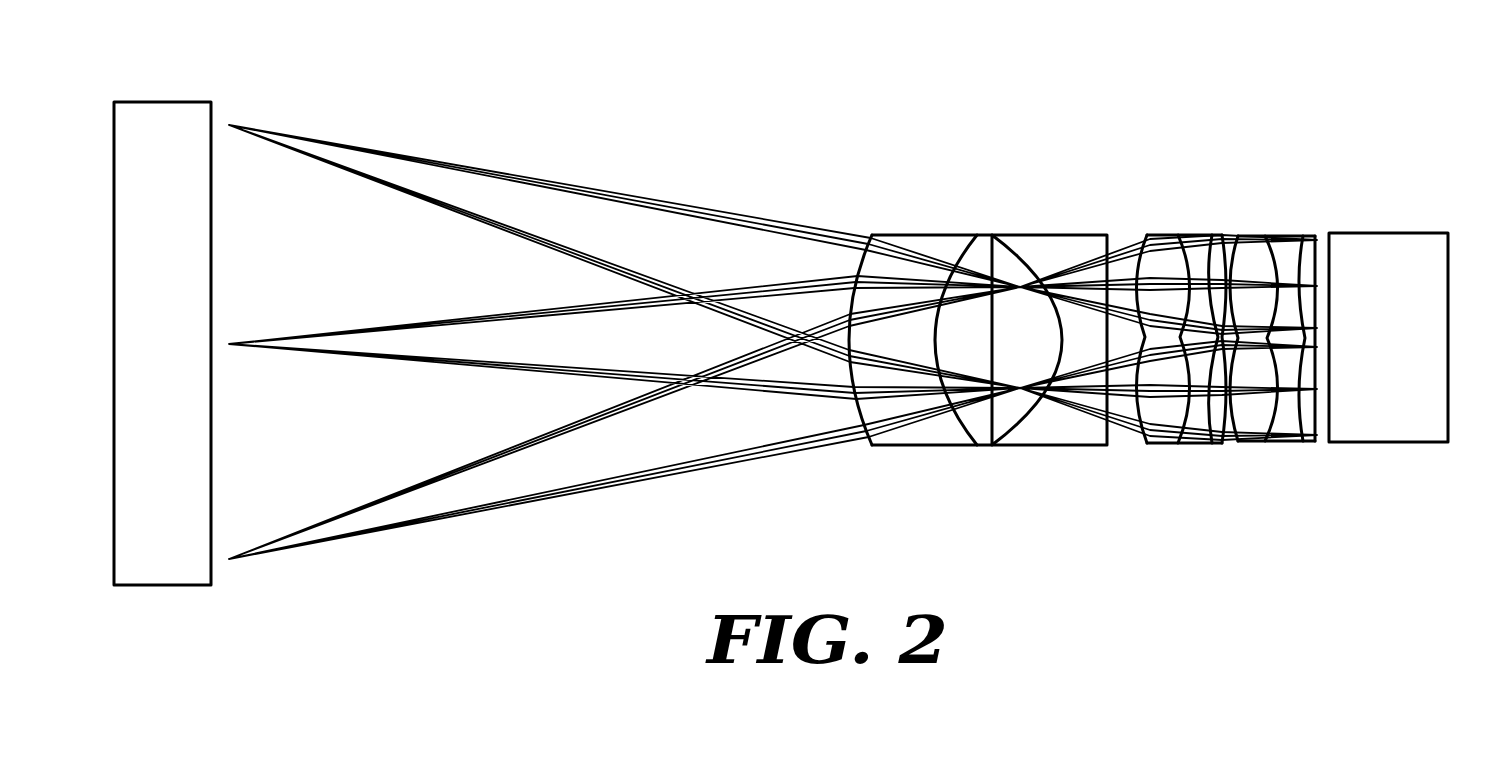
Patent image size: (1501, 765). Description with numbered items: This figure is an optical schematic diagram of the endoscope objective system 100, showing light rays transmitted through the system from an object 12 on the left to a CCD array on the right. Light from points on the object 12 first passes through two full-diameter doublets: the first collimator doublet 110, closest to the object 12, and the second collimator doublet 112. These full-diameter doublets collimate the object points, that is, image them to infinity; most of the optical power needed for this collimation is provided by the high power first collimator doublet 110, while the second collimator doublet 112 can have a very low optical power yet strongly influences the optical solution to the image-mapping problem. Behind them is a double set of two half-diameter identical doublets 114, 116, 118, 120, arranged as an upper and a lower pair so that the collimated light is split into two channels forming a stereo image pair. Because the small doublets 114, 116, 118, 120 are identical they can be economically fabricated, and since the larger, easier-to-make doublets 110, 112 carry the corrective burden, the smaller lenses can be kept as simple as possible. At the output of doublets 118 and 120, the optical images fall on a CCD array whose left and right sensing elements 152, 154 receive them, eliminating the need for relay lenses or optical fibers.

The object 12 is at (172, 104).
The endoscope objective system 100 is at (1047, 102).
The first collimator doublet 110 is at (918, 235).
The second collimator doublet 112 is at (1040, 235).
The half-diameter doublet 114 is at (1172, 235).
The half-diameter doublet 116 is at (1163, 443).
The half-diameter doublet 118 is at (1284, 236).
The half-diameter doublet 120 is at (1286, 441).
The left sensing element 152 is at (1408, 306).
The right sensing element 154 is at (1372, 233).